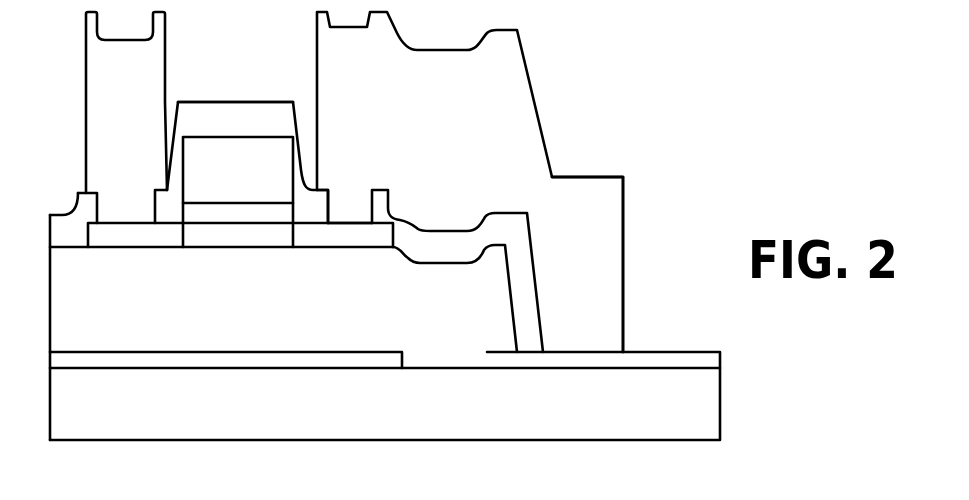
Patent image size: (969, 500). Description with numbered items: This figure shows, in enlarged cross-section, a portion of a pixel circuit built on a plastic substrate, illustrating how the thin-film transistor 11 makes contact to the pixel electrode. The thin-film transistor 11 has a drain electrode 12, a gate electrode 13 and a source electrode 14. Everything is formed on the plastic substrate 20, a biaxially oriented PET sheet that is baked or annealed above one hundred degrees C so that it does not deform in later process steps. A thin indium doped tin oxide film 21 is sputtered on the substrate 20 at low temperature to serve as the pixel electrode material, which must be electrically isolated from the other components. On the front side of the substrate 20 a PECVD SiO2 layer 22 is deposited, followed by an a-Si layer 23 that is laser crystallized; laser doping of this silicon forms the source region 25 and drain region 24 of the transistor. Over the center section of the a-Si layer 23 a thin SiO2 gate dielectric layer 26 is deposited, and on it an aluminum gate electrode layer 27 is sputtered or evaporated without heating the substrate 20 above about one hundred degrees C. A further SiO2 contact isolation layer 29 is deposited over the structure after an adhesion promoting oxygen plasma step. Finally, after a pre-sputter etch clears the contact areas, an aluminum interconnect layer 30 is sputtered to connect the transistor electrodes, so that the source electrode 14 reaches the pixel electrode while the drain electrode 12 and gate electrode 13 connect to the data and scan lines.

The thin-film transistor 11 is at (571, 99).
The drain electrode 12 is at (141, 123).
The gate electrode 13 is at (214, 68).
The source electrode 14 is at (456, 133).
The plastic substrate 20 is at (373, 418).
The indium doped tin oxide film 21 is at (130, 362).
The SiO2 layer 22 is at (368, 313).
The a-Si layer 23 is at (202, 237).
The drain region 24 is at (123, 237).
The source region 25 is at (347, 237).
The SiO2 gate dielectric layer 26 is at (243, 215).
The aluminum gate electrode layer 27 is at (253, 186).
The SiO2 contact isolation layer 29 is at (238, 122).
The aluminum interconnect layer 30 is at (598, 228).